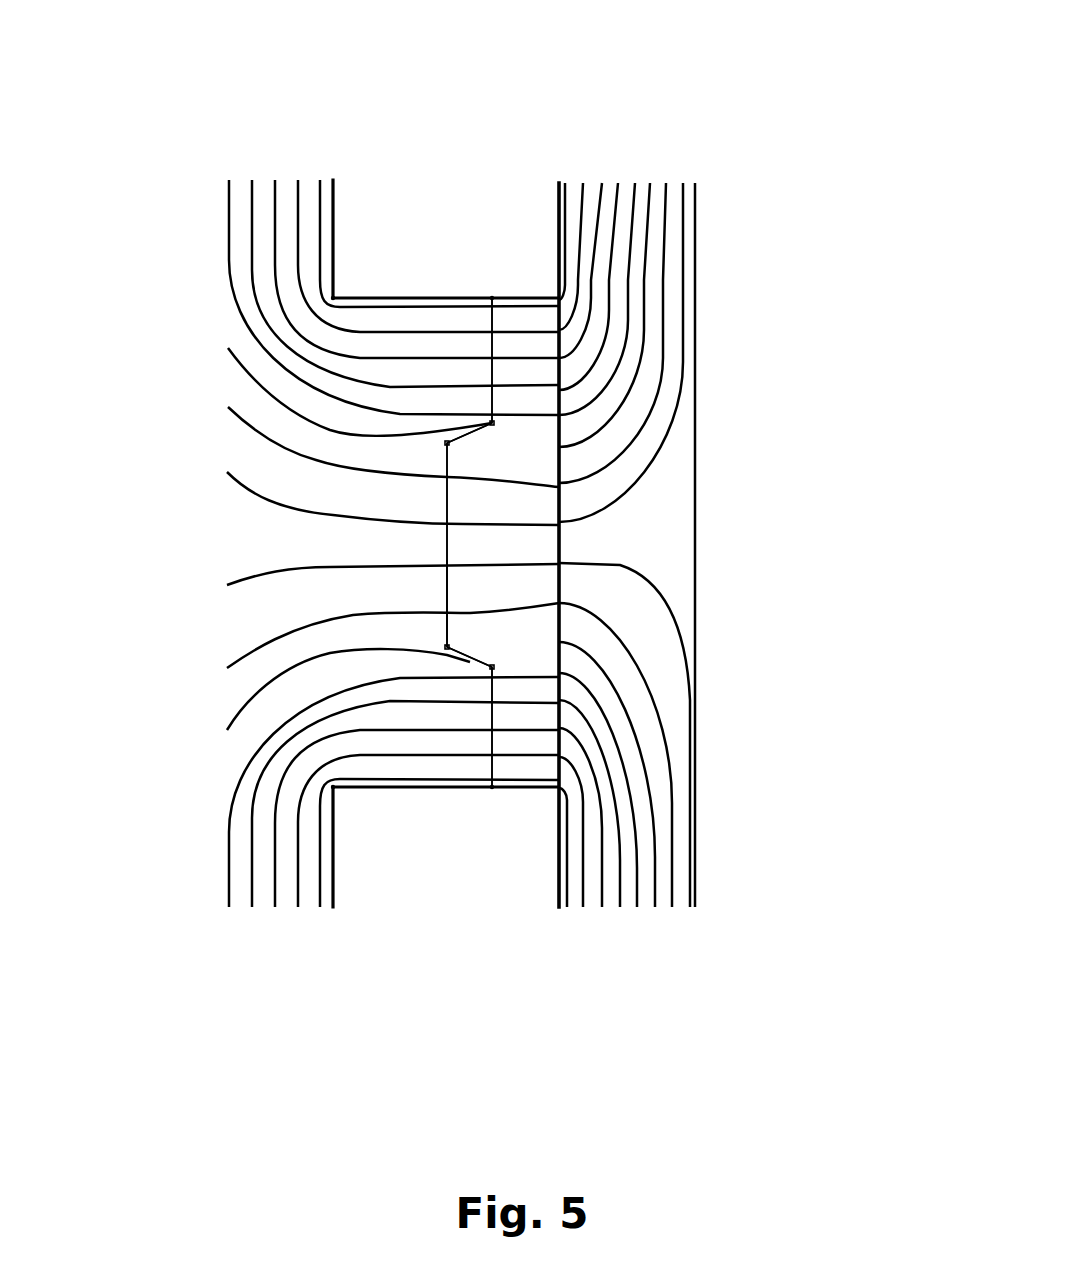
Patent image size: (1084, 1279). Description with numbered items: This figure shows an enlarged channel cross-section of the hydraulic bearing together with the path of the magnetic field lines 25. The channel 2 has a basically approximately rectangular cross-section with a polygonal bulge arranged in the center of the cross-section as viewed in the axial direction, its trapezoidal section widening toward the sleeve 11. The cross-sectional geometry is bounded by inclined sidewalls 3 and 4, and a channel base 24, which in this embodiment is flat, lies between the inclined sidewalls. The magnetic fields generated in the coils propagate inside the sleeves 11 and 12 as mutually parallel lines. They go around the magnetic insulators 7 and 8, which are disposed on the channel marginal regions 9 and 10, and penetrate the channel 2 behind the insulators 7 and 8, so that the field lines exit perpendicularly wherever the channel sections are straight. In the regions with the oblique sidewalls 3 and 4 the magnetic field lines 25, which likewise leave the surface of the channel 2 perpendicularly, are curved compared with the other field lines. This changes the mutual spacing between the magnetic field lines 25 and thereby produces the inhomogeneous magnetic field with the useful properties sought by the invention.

The channel 2 is at (455, 548).
The inclined sidewall 3 is at (470, 446).
The inclined sidewall 4 is at (472, 640).
The magnetic insulator 7 is at (503, 233).
The magnetic insulator 8 is at (510, 848).
The channel marginal region 9 is at (476, 306).
The channel marginal region 10 is at (487, 757).
The sleeve 11 is at (692, 582).
The sleeve 12 is at (270, 863).
The channel base 24 is at (440, 595).
The magnetic field lines 25 is at (640, 494).